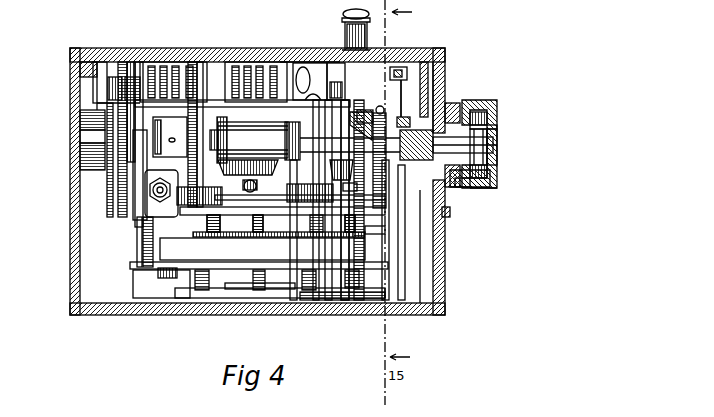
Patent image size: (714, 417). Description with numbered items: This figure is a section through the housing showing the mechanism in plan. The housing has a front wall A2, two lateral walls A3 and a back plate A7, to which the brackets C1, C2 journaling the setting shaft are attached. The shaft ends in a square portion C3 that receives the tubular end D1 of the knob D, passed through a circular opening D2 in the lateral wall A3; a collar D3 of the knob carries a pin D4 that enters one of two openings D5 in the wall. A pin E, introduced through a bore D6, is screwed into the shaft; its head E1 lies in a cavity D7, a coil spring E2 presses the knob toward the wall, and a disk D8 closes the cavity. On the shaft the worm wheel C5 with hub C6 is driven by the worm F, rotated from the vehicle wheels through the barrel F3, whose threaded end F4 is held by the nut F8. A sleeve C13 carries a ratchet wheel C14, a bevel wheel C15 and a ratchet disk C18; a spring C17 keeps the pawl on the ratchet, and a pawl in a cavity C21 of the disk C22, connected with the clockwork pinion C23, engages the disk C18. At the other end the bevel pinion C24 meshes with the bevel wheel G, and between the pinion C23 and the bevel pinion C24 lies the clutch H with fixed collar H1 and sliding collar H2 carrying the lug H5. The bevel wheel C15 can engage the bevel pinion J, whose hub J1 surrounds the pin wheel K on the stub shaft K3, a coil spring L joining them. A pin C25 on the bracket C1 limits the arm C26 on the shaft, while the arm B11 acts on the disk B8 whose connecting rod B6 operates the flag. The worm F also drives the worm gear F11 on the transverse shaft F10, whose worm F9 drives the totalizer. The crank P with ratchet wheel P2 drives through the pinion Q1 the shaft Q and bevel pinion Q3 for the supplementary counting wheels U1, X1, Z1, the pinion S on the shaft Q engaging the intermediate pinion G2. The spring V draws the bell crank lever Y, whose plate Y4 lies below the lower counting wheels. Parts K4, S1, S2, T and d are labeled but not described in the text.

The lateral wall A3 is at (78, 190).
The front wall A2 is at (272, 303).
The back plate A7 is at (290, 62).
The connecting rod B6 is at (110, 206).
The disk B8 is at (105, 148).
The arm B11 is at (118, 132).
The bracket C1 is at (133, 103).
The bracket C2 is at (392, 162).
The square end portion C3 is at (446, 97).
The worm wheel C5 is at (140, 97).
The hub C6 is at (183, 95).
The sleeve C13 is at (278, 97).
The ratchet wheel C14 is at (228, 62).
The bevel wheel C15 is at (218, 128).
The spring C17 is at (173, 137).
The ratchet disk C18 is at (270, 136).
The cavity C21 is at (350, 186).
The disk C22 is at (292, 120).
The pinion C23 is at (360, 108).
The bevel pinion C24 is at (405, 117).
The pin C25 is at (116, 76).
The arm C26 is at (135, 210).
The knob D is at (488, 104).
The tubular end D1 is at (460, 187).
The circular opening D2 is at (490, 179).
The collar D3 is at (453, 104).
The pin D4 is at (468, 179).
The openings D5 is at (450, 215).
The bore D6 is at (488, 120).
The cavity D7 is at (497, 168).
The disk D8 is at (497, 142).
The pin E is at (494, 139).
The head E1 is at (497, 150).
The coil spring E2 is at (497, 124).
The worm F is at (190, 190).
The barrel F3 is at (140, 240).
The screw-threaded end F4 is at (148, 230).
The nut F8 is at (195, 233).
The worm F9 is at (195, 62).
The transverse shaft F10 is at (203, 110).
The worm gear F11 is at (182, 213).
The bevel wheel G is at (340, 170).
The intermediate pinion G2 is at (388, 267).
The clutch H is at (364, 195).
The fixed collar H1 is at (386, 205).
The movable collar H2 is at (354, 114).
The lug H5 is at (380, 106).
The bevel pinion J is at (257, 162).
The cylindrical hub J1 is at (227, 168).
The pin wheel K is at (250, 192).
The stub shaft K3 is at (257, 233).
The roller K4 is at (283, 195).
The coil spring L is at (262, 200).
The crank P is at (361, 22).
The ratchet wheel P2 is at (336, 81).
The transverse shaft Q is at (345, 226).
The pinion Q1 is at (309, 75).
The bevel pinion Q3 is at (308, 92).
The pinion S is at (365, 232).
The rack S1 is at (284, 237).
The post S2 is at (216, 233).
The cap T is at (176, 290).
The upper units wheel U1 is at (345, 300).
The spring V is at (401, 114).
The counting wheel X1 is at (259, 291).
The bell crank lever Y is at (389, 249).
The plate Y4 is at (167, 290).
The counting wheel Z1 is at (202, 291).
The stop d is at (352, 191).